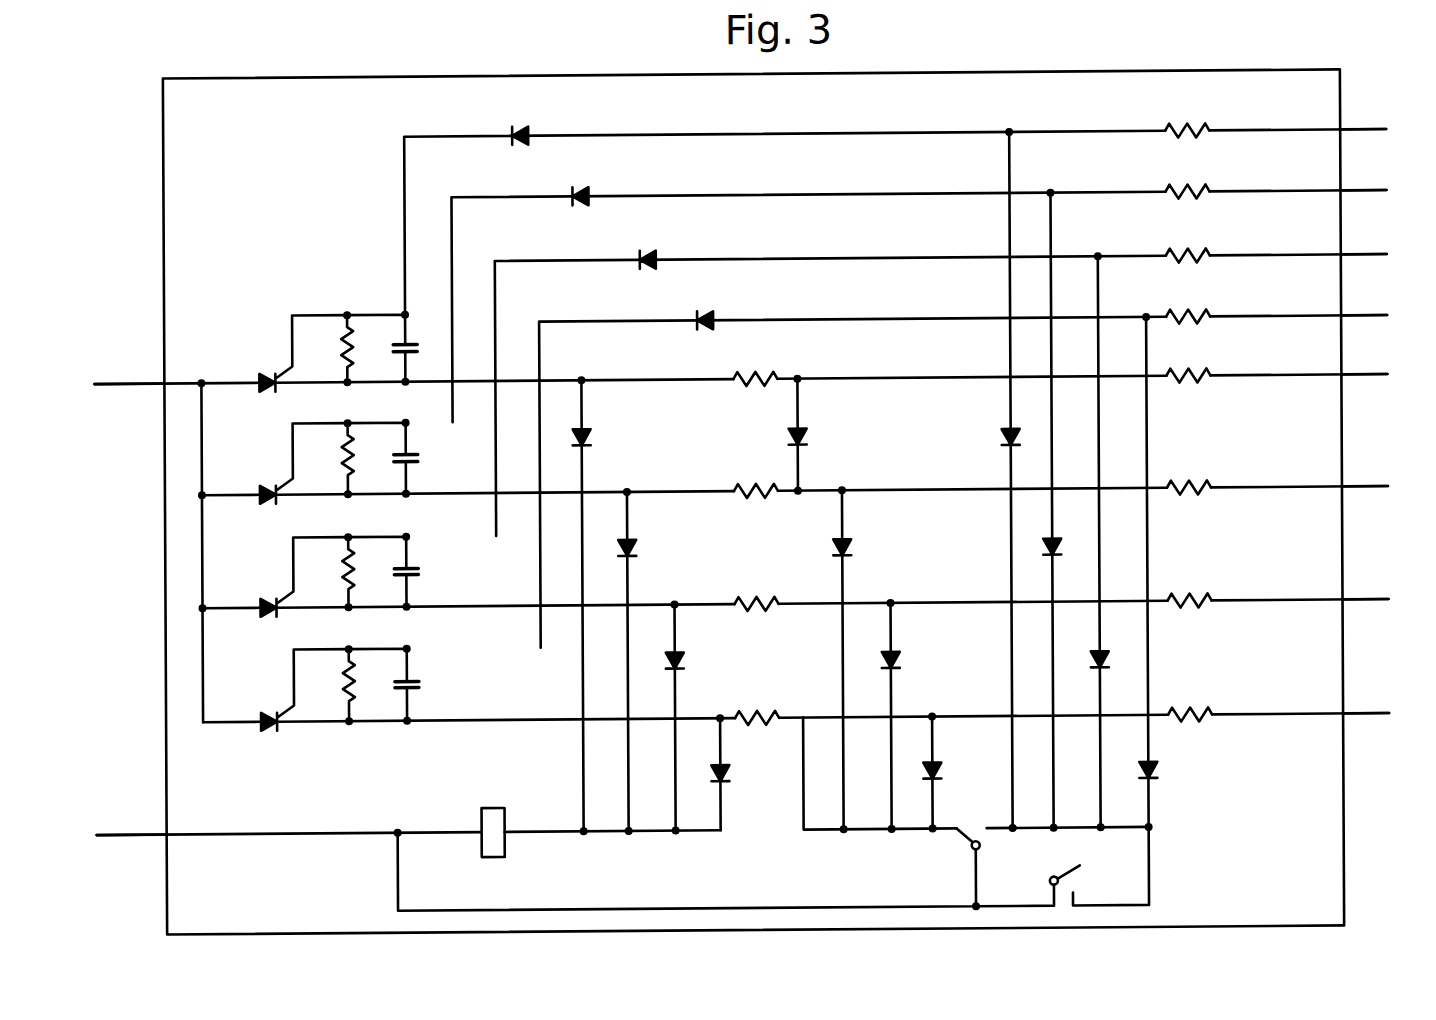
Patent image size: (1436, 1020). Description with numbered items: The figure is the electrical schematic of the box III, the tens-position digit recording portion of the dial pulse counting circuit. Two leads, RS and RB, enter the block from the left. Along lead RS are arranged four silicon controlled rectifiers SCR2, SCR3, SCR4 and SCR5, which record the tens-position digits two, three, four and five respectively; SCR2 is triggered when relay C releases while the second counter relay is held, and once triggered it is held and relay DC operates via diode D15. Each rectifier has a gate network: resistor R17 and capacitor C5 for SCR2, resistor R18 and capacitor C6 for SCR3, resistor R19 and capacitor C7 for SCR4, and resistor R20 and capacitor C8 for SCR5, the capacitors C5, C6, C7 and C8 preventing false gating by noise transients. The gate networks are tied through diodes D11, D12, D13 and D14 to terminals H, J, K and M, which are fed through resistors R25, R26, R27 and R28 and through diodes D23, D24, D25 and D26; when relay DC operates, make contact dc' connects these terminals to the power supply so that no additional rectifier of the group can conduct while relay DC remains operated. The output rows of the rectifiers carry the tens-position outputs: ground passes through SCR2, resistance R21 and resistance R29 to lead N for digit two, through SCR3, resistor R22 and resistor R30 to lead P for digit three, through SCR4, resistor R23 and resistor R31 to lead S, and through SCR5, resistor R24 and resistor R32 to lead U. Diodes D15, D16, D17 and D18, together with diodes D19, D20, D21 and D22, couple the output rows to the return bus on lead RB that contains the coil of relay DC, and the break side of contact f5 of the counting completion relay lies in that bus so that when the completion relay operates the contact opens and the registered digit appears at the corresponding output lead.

The input lead RS is at (109, 385).
The input lead RB is at (112, 831).
The terminal H is at (1377, 134).
The terminal J is at (1372, 196).
The terminal K is at (1376, 259).
The terminal M is at (1378, 321).
The lead N is at (1377, 381).
The output lead P is at (1378, 492).
The output lead S is at (1379, 606).
The output lead U is at (1381, 718).
The silicon controlled rectifier SCR2 is at (287, 353).
The silicon controlled rectifier SCR3 is at (288, 463).
The silicon controlled rectifier SCR4 is at (290, 577).
The silicon controlled rectifier SCR5 is at (291, 690).
The resistor R17 is at (328, 348).
The resistor R18 is at (329, 458).
The resistor R19 is at (331, 572).
The resistor R20 is at (332, 685).
The resistance R21 is at (756, 366).
The resistor R22 is at (758, 478).
The resistor R23 is at (760, 591).
The resistor R24 is at (763, 705).
The resistor R25 is at (1187, 117).
The resistor R26 is at (1187, 178).
The resistor R27 is at (1189, 241).
The resistor R28 is at (1189, 303).
The resistance R29 is at (1189, 363).
The resistor R30 is at (1192, 474).
The resistor R31 is at (1192, 587).
The resistor R32 is at (1193, 701).
The capacitor C5 is at (394, 348).
The capacitor C6 is at (397, 458).
The capacitor C7 is at (400, 571).
The capacitor C8 is at (399, 684).
The diode D11 is at (515, 119).
The diode D12 is at (580, 180).
The diode D13 is at (645, 244).
The diode D14 is at (708, 305).
The diode D15 is at (608, 435).
The diode D16 is at (653, 543).
The diode D17 is at (698, 660).
The diode D18 is at (745, 776).
The diode D19 is at (825, 433).
The diode D20 is at (870, 543).
The diode D21 is at (917, 655).
The diode D22 is at (959, 767).
The diode D23 is at (989, 437).
The diode D24 is at (1038, 534).
The diode D25 is at (1085, 648).
The diode D26 is at (1171, 776).
The relay DC is at (490, 815).
The contact f5 is at (972, 822).
The make contact dc' is at (1085, 879).
The box III is at (1357, 816).